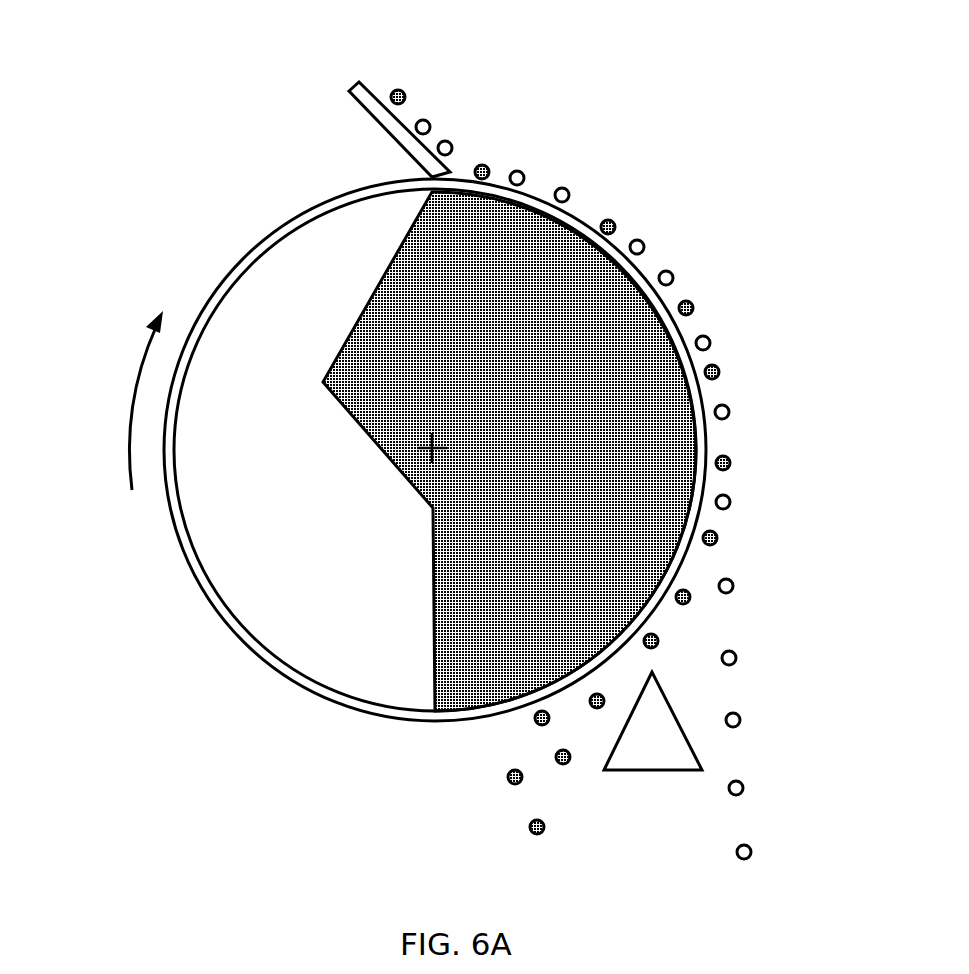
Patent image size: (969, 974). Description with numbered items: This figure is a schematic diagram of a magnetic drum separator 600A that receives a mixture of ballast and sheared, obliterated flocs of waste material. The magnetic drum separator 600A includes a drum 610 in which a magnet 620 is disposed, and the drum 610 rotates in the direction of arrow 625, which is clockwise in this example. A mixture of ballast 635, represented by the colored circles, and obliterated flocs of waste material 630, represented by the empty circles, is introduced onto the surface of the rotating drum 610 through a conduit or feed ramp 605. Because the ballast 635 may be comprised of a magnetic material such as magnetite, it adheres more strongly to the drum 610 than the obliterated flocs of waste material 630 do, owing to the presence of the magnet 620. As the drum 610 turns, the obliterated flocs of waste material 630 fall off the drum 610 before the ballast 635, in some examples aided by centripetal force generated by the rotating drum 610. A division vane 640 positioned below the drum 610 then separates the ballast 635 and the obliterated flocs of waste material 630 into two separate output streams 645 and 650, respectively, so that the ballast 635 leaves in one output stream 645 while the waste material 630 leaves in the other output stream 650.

The magnetic drum separator 600A is at (140, 191).
The conduit or feed ramp 605 is at (366, 110).
The drum 610 is at (311, 210).
The magnet 620 is at (548, 402).
The arrow 625 is at (113, 400).
The obliterated flocs of waste material 630 is at (520, 170).
The ballast 635 is at (692, 302).
The division vane 640 is at (678, 756).
The output stream 645 is at (470, 728).
The output stream 650 is at (772, 705).